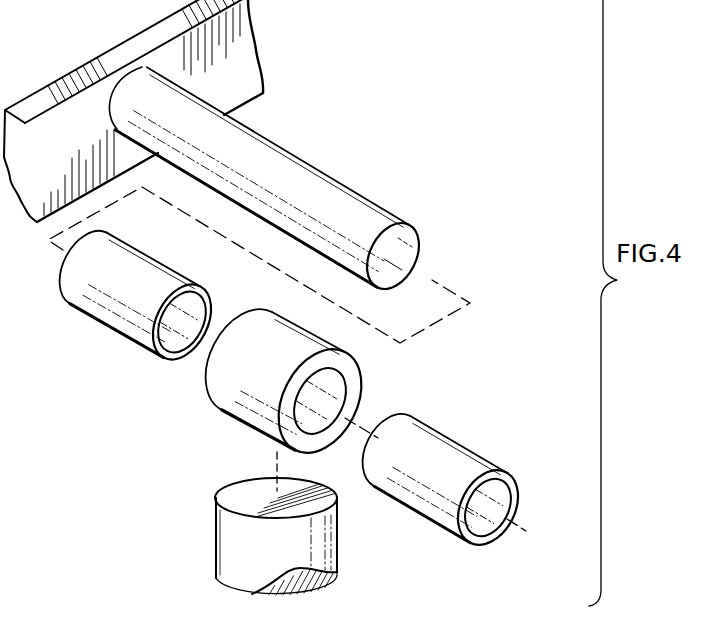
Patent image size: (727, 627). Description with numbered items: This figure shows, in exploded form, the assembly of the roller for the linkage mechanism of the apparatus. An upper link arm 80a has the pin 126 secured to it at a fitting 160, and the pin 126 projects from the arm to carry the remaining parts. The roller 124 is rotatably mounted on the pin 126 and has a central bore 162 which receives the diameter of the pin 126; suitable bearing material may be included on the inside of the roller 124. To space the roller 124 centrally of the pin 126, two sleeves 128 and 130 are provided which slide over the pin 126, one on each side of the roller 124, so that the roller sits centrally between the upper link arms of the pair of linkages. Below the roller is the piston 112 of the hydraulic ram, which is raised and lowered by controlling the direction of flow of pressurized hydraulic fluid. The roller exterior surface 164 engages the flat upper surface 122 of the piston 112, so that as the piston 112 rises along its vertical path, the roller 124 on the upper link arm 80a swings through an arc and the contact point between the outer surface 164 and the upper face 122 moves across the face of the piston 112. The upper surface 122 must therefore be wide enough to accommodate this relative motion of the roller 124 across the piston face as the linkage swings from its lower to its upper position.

The upper link arm 80a is at (223, 54).
The fitting 160 is at (122, 88).
The pin 126 is at (353, 196).
The sleeve 128 is at (100, 297).
The roller 124 is at (237, 372).
The roller exterior surface 164 is at (238, 418).
The central bore 162 is at (344, 392).
The sleeve 130 is at (434, 488).
The upper end of the piston 122 is at (258, 496).
The piston 112 is at (310, 543).